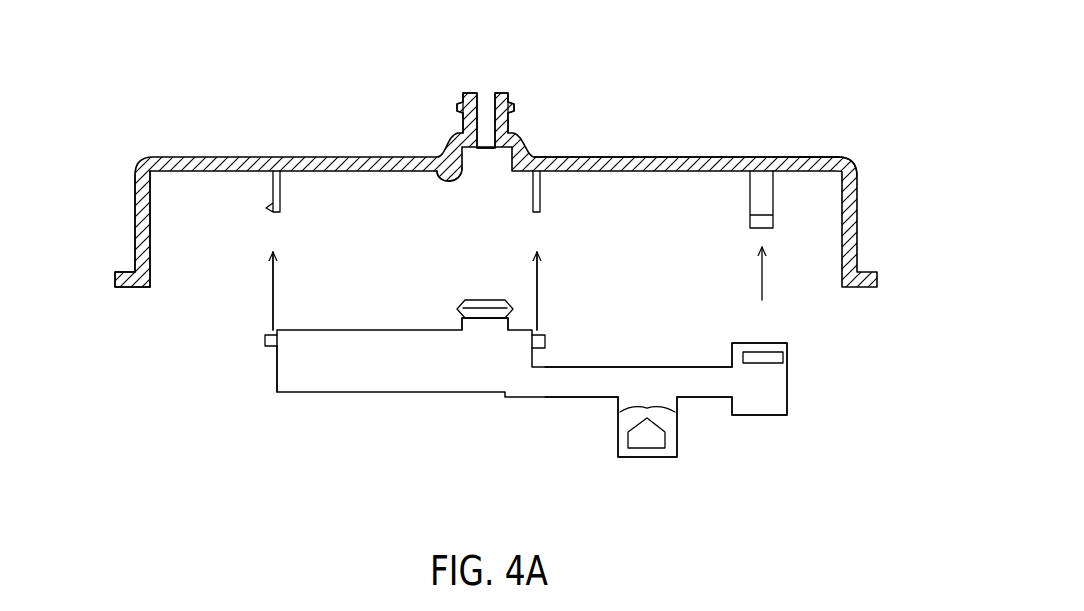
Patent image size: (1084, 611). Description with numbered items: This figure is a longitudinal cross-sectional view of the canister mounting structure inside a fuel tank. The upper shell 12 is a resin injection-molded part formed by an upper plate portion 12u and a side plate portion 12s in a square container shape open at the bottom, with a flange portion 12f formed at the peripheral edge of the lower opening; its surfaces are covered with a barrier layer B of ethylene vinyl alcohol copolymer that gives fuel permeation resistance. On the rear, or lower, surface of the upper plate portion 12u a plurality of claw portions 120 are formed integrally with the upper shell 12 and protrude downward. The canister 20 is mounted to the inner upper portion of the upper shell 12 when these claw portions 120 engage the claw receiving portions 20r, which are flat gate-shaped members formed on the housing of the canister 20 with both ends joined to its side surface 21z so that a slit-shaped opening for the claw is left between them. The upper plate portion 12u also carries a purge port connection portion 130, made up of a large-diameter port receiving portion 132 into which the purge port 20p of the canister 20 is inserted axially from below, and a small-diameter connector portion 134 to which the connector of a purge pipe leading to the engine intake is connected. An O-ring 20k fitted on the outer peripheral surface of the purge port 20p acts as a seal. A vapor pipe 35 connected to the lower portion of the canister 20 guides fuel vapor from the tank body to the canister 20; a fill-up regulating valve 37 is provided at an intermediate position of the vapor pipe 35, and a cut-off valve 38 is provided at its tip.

The upper shell 12 is at (580, 150).
The upper plate portion 12u is at (642, 155).
The side plate portion 12s is at (137, 220).
The flange portion 12f is at (125, 290).
The barrier layer B is at (806, 155).
The purge port connection portion 130 is at (510, 92).
The connector portion 134 is at (457, 103).
The port receiving portion 132 is at (445, 164).
The claw portion 120 is at (283, 188).
The canister 20 is at (473, 398).
The O-ring 20k is at (457, 315).
The purge port 20p is at (483, 300).
The claw receiving portion 20r is at (265, 340).
The side surface 21z is at (275, 365).
The vapor pipe 35 is at (658, 375).
The fill-up regulating valve 37 is at (645, 459).
The cut-off valve 38 is at (790, 372).